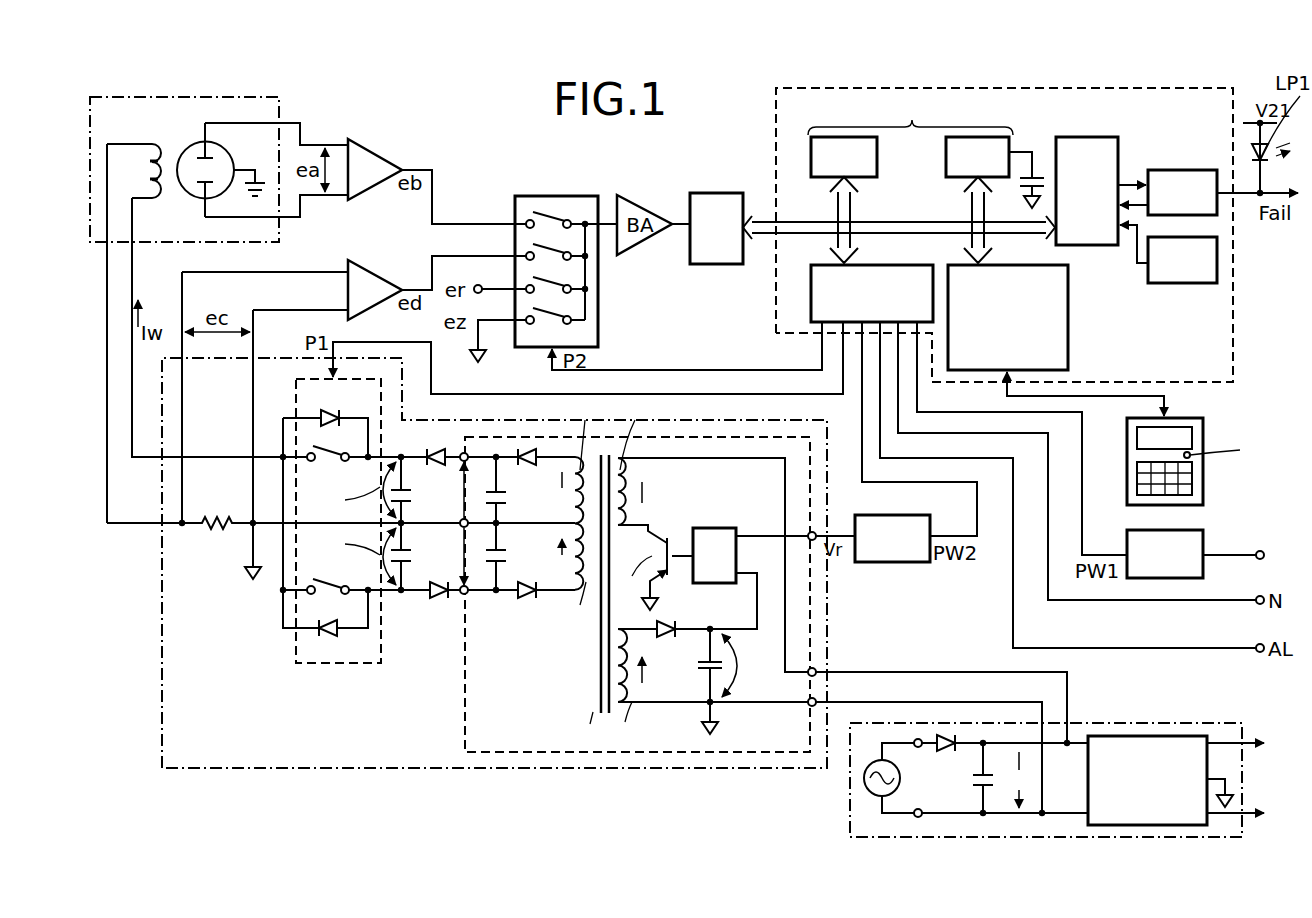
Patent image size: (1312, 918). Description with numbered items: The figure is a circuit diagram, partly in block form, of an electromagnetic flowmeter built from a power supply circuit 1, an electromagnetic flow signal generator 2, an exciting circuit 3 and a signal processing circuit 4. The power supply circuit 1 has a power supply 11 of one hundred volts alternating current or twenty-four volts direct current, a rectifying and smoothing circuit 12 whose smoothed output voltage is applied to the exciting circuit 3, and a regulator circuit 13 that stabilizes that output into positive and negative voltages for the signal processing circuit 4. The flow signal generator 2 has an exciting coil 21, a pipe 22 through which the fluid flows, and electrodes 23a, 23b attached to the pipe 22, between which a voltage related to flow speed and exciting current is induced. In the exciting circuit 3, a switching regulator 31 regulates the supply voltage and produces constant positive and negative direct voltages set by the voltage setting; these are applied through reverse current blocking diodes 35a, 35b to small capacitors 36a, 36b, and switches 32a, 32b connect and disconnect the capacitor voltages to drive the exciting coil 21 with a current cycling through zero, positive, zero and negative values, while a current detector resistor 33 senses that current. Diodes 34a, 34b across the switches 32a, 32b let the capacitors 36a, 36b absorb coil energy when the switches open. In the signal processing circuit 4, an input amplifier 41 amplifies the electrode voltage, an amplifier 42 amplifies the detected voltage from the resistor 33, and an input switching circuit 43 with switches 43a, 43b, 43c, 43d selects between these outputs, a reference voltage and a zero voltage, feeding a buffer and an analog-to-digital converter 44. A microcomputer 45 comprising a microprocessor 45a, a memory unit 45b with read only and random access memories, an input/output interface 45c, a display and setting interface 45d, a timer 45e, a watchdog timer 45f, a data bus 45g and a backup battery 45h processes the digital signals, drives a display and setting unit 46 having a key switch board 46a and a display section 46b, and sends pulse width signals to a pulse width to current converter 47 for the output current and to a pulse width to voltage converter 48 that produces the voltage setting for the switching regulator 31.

The power supply circuit 1 is at (860, 762).
The electromagnetic flow signal generator 2 is at (284, 103).
The exciting circuit 3 is at (267, 732).
The signal processing circuit 4 is at (757, 172).
The power supply 11 is at (875, 797).
The rectifying and smoothing circuit 12 is at (968, 776).
The regulator circuit 13 is at (1140, 745).
The exciting coil 21 is at (158, 196).
The pipe 22 is at (225, 151).
The electrode 23a is at (200, 152).
The electrode 23b is at (205, 186).
The switching regulator 31 is at (465, 712).
The switch 32a is at (342, 465).
The switch 32b is at (342, 577).
The current detector resistor 33 is at (218, 530).
The diode 34a is at (322, 414).
The diode 34b is at (322, 640).
The reverse current blocking diode 35a is at (438, 450).
The reverse current blocking diode 35b is at (432, 596).
The capacitor 36a is at (421, 490).
The capacitor 36b is at (421, 556).
The input amplifier 41 is at (375, 165).
The amplifier 42 is at (370, 283).
The input switching circuit 43 is at (543, 247).
The switch 43a is at (571, 213).
The switch 43b is at (557, 245).
The switch 43c is at (531, 278).
The switch 43d is at (527, 335).
The A/D converter 44 is at (716, 252).
The microcomputer 45 is at (770, 318).
The CPU 45a is at (1093, 153).
The memory unit 45b is at (910, 137).
The input/output interface 45c is at (865, 290).
The display and setting interface 45d is at (1057, 308).
The timer 45e is at (1190, 280).
The watchdog timer 45f is at (1170, 178).
The data bus 45g is at (905, 224).
The battery 45h is at (1035, 176).
The display and setting unit 46 is at (1183, 453).
The key switch board 46a is at (1185, 480).
The display section 46b is at (1192, 437).
The pulse width to current converter 47 is at (1200, 540).
The pulse width to voltage converter 48 is at (885, 552).